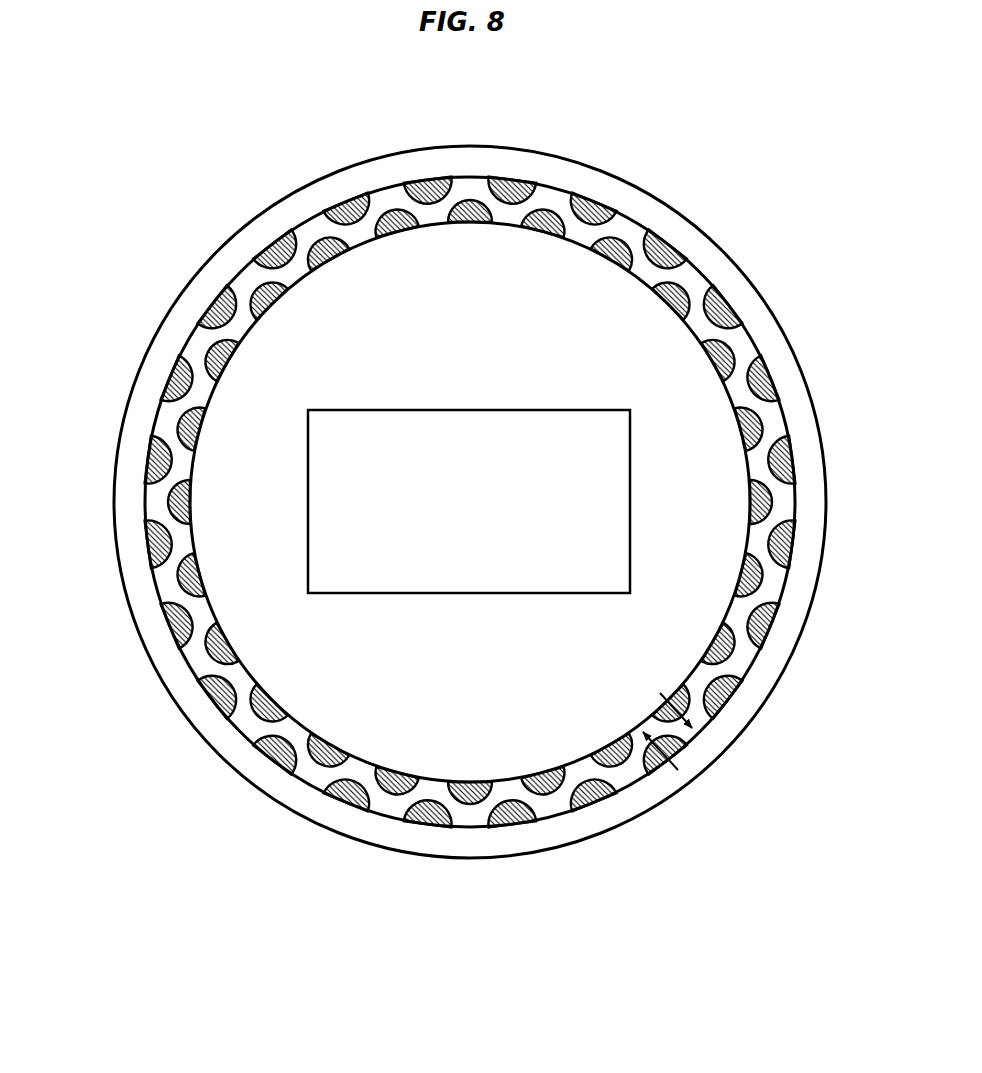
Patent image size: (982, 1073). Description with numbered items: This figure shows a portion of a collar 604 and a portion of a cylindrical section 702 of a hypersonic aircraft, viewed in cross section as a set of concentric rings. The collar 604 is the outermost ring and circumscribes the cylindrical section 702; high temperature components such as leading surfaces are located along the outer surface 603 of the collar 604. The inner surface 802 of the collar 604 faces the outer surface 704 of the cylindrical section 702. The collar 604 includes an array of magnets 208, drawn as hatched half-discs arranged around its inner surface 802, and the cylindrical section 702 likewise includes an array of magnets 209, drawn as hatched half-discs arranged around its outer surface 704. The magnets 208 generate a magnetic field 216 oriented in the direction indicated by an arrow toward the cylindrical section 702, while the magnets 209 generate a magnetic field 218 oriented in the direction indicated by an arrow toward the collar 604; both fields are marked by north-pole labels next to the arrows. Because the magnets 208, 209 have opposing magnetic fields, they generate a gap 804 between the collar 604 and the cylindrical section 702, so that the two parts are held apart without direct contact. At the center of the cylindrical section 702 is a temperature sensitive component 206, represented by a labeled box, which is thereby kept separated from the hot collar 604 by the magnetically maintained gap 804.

The outer surface 603 is at (287, 148).
The collar 604 is at (547, 153).
The inner surface 802 is at (377, 812).
The cylindrical section 702 is at (660, 367).
The gap 804 is at (470, 507).
The outer surface 704 is at (407, 502).
The magnets 208 is at (285, 753).
The magnets 209 is at (217, 652).
The magnetic field 216 is at (678, 760).
The magnetic field 218 is at (717, 715).
The temperature sensitive component 206 is at (452, 563).